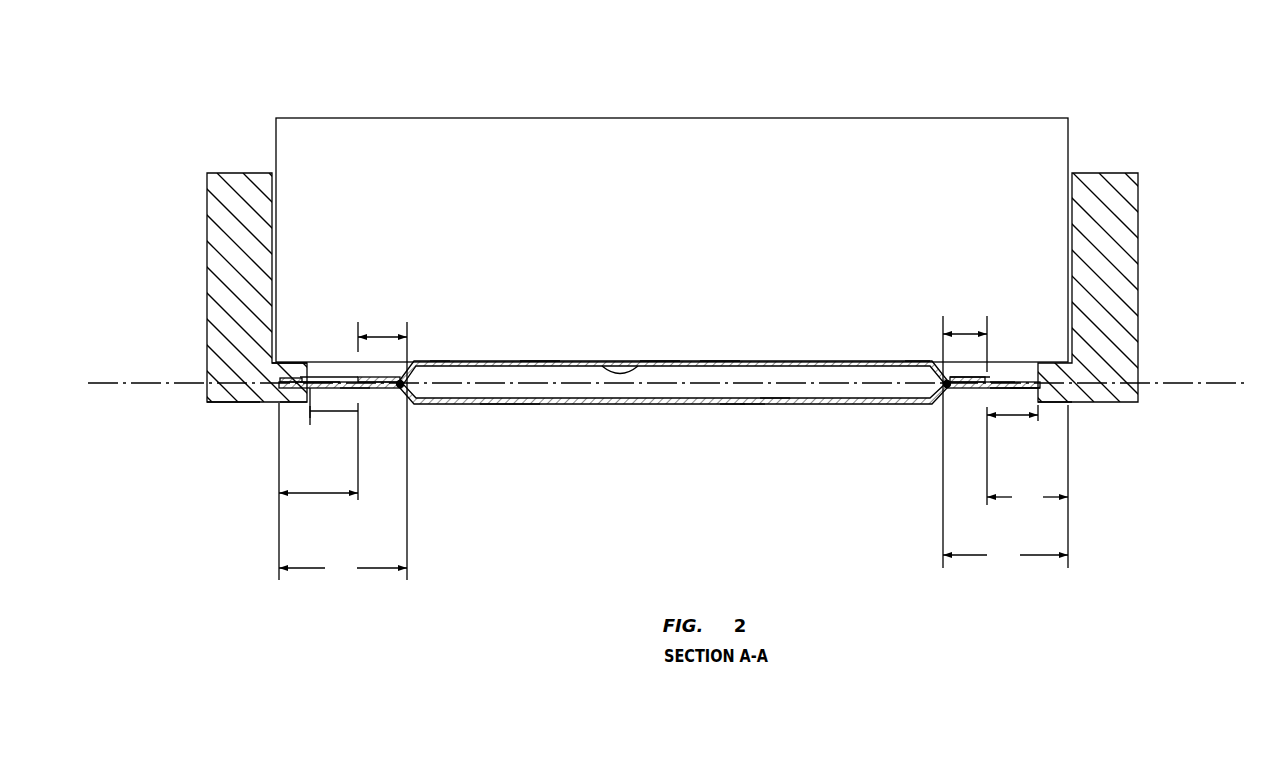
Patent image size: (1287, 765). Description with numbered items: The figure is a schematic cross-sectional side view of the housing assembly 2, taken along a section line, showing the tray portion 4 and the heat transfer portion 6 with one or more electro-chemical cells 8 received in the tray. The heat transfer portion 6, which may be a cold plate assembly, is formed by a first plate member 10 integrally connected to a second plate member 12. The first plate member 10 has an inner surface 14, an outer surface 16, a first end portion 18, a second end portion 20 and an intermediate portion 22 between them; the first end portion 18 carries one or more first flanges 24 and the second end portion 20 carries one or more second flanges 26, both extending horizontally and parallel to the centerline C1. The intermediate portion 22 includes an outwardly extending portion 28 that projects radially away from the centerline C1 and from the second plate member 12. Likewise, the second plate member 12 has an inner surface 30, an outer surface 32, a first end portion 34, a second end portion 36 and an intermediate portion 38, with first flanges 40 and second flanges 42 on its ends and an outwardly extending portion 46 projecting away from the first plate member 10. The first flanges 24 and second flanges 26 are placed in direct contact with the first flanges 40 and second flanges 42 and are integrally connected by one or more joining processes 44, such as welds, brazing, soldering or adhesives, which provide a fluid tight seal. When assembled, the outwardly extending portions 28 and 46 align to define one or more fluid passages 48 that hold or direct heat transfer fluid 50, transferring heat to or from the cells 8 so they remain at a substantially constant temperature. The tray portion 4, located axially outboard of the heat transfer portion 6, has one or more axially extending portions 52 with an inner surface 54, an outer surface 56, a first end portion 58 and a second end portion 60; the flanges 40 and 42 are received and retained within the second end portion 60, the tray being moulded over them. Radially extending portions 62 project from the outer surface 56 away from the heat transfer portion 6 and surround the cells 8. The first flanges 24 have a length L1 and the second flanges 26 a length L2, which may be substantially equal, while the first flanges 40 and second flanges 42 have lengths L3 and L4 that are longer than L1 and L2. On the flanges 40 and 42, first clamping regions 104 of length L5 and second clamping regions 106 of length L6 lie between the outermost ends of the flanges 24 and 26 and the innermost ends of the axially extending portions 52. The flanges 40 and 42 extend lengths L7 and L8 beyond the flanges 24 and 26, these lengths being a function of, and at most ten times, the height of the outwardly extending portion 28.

The housing assembly 2 is at (1140, 54).
The tray portion 4 is at (1127, 203).
The heat transfer portion 6 is at (600, 462).
The electro-chemical cells 8 is at (538, 177).
The first plate member 10 is at (800, 362).
The second plate member 12 is at (875, 403).
The inner surface 14 is at (633, 364).
The outer surface 16 is at (657, 362).
The first end portion 18 is at (379, 378).
The second end portion 20 is at (972, 378).
The intermediate portion 22 is at (720, 363).
The first flanges 24 is at (401, 380).
The second flanges 26 is at (977, 377).
The outwardly extending portion 28 is at (543, 362).
The inner surface 30 is at (503, 401).
The outer surface 32 is at (528, 403).
The first end portion 34 is at (356, 392).
The second end portion 36 is at (1002, 392).
The intermediate portion 38 is at (735, 403).
The first flanges 40 is at (298, 412).
The second flanges 42 is at (1018, 392).
The joining processes 44 is at (398, 396).
The outwardly extending portion 46 is at (750, 403).
The fluid passages 48 is at (771, 396).
The heat transfer fluid 50 is at (489, 395).
The axially extending portions 52 is at (290, 405).
The inner surface 54 is at (300, 414).
The outer surface 56 is at (296, 376).
The first end portion 58 is at (220, 403).
The second end portion 60 is at (277, 409).
The radially extending portions 62 is at (213, 224).
The first clamping regions 104 is at (306, 376).
The second clamping regions 106 is at (1020, 387).
The length of first flanges L1 is at (372, 336).
The length of second flanges L2 is at (960, 332).
The length of first flanges L3 is at (343, 491).
The length of second flanges L4 is at (1005, 554).
The length of first clamping regions L5 is at (330, 417).
The length of second clamping regions L6 is at (1012, 455).
The extension length of first flanges L7 is at (297, 495).
The extension length of second flanges L8 is at (1027, 486).
The centerline C1 is at (1190, 384).